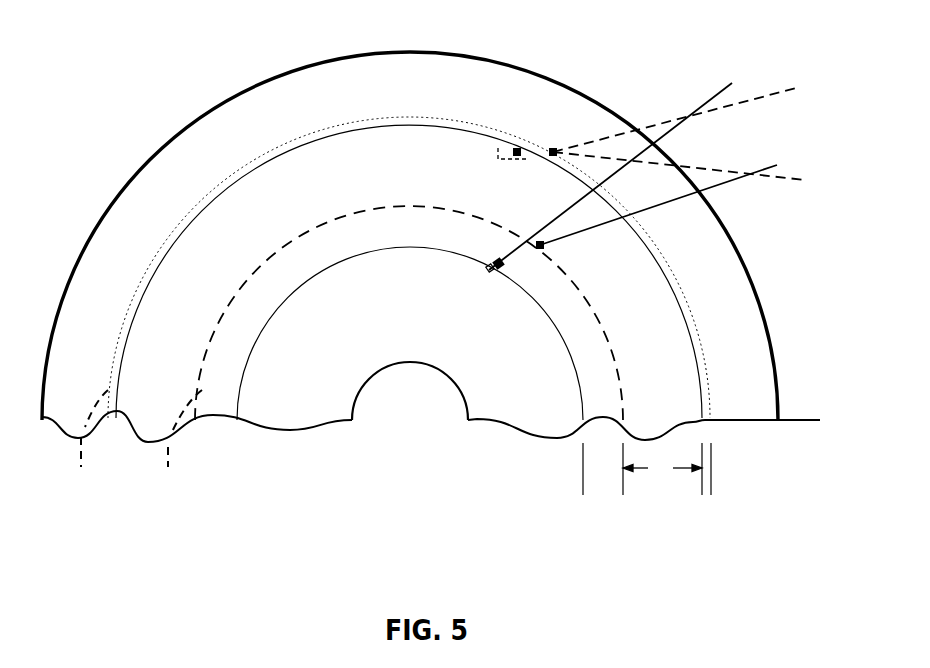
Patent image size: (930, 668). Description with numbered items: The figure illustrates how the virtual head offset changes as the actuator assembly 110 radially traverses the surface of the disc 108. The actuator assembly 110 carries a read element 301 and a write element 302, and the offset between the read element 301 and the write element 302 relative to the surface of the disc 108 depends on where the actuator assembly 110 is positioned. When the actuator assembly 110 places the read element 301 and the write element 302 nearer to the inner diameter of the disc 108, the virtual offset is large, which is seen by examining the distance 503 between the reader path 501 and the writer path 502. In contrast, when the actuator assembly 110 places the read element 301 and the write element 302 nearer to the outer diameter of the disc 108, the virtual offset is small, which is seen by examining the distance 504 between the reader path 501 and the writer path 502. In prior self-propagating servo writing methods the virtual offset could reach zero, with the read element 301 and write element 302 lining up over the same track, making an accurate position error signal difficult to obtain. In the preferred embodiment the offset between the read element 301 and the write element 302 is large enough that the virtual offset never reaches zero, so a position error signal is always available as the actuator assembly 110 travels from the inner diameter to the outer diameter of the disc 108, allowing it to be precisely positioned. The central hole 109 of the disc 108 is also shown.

The disc 108 is at (157, 163).
The center hole 109 is at (409, 420).
The actuator assembly 110 is at (752, 124).
The read element 301 is at (488, 247).
The write element 302 is at (535, 225).
The reader path 501 is at (138, 321).
The writer path 502 is at (131, 445).
The distance between reader path and writer path near inner diameter 503 is at (583, 468).
The distance between reader path and writer path near outer diameter 504 is at (711, 468).